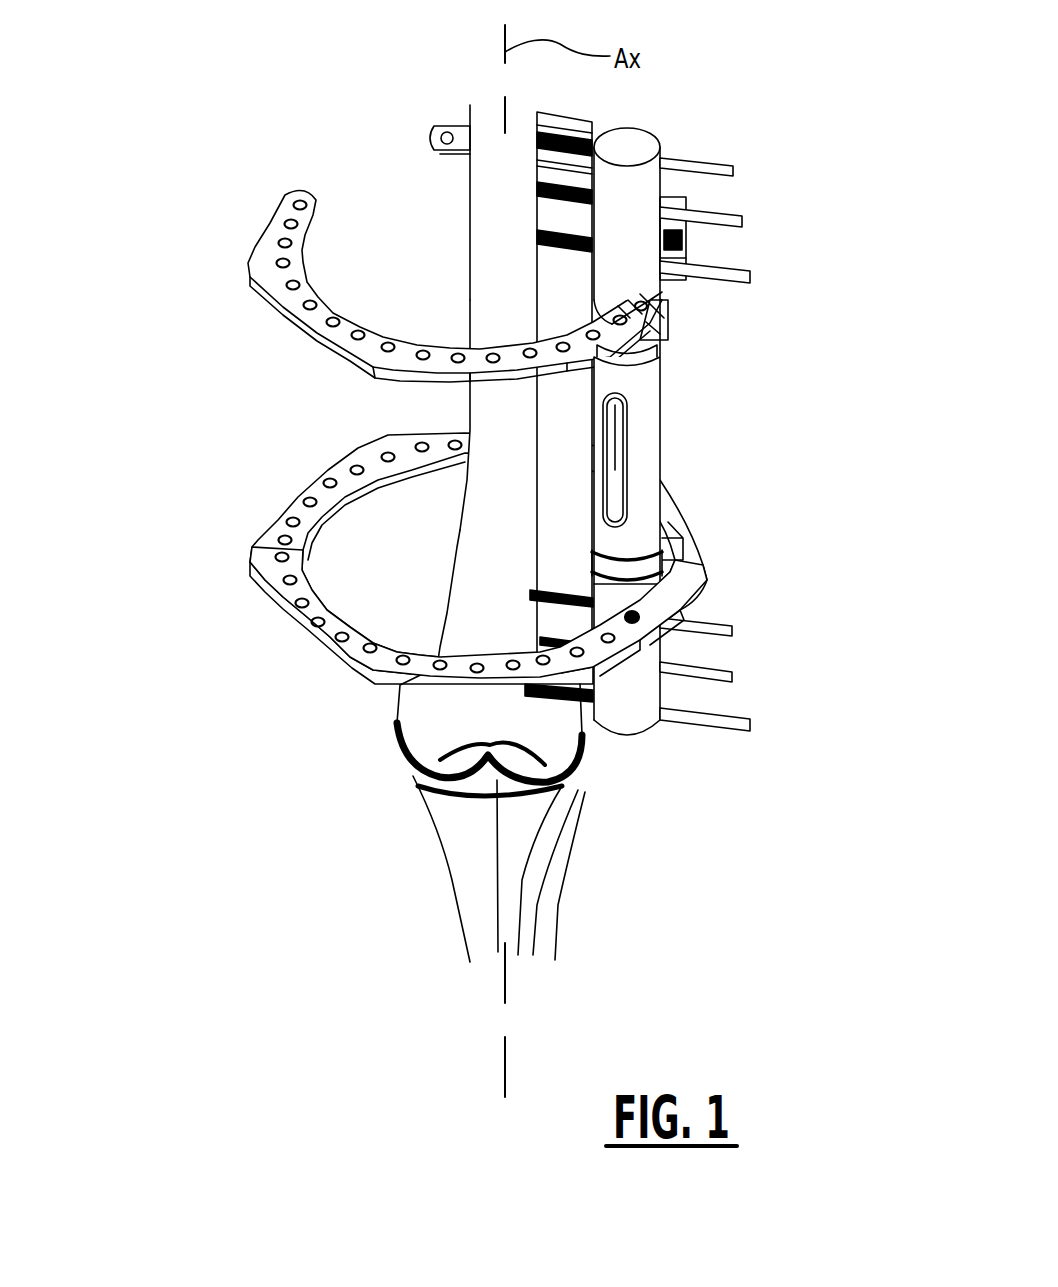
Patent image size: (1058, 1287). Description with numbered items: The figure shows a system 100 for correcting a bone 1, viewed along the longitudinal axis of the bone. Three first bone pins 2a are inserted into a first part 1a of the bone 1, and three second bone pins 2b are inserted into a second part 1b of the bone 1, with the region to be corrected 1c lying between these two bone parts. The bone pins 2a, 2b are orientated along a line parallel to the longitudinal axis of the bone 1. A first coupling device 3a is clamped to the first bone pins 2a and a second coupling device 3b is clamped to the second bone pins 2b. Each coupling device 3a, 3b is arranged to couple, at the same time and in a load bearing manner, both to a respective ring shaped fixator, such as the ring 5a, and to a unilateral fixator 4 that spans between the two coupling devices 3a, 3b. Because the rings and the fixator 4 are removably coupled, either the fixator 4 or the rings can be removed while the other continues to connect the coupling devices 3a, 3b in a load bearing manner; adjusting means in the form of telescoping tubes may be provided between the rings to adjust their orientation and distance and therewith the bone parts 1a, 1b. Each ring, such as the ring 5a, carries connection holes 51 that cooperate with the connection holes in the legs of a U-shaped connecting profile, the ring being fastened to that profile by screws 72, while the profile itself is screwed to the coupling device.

The system for correcting a bone 100 is at (262, 870).
The bone 1 is at (393, 852).
The first part of the bone 1a is at (483, 178).
The second part of the bone 1b is at (473, 598).
The region to be corrected 1c is at (485, 410).
The first bone pins 2a is at (763, 163).
The second bone pins 2b is at (765, 617).
The first coupling device 3a is at (636, 180).
The second coupling device 3b is at (628, 718).
The unilateral fixator 4 is at (648, 445).
The first ring shaped fixator 5a is at (262, 273).
The connection holes of the rings 51 is at (359, 333).
The screws 72 is at (640, 302).